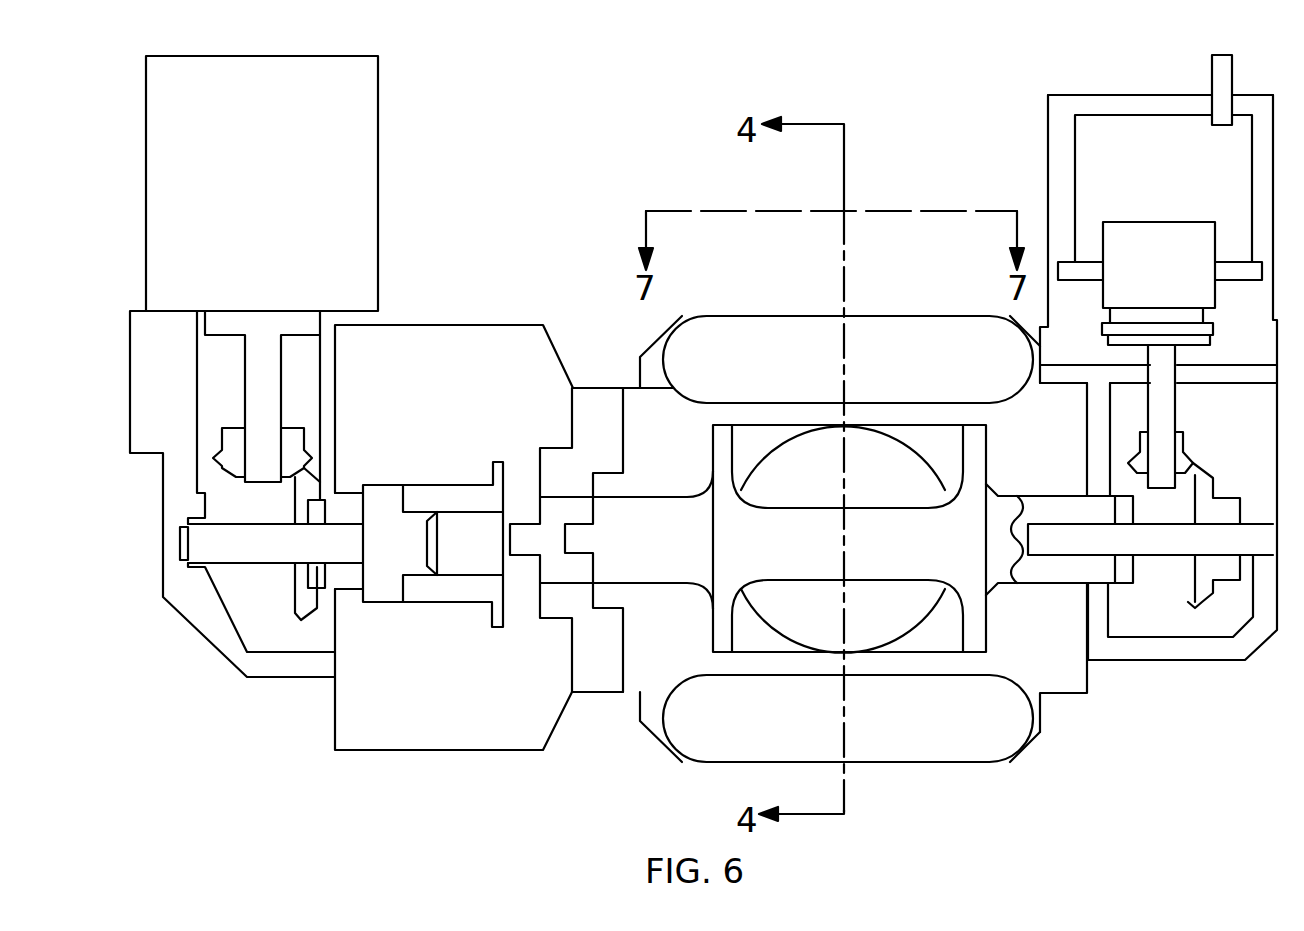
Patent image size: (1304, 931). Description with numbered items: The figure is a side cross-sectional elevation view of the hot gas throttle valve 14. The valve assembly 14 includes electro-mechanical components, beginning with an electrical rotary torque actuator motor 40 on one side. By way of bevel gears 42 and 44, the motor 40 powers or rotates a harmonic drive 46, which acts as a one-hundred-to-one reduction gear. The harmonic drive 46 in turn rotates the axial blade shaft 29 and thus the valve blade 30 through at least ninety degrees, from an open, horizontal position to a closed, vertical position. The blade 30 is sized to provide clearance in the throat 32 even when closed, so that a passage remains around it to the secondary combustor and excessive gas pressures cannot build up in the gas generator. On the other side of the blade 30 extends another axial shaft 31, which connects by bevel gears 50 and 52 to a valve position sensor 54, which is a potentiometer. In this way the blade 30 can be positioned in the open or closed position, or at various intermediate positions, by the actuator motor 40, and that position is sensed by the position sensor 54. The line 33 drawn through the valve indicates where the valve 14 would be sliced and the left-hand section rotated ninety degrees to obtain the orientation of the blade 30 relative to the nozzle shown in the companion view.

The hot gas throttle valve 14 is at (1230, 739).
The axial blade shaft 29 is at (647, 550).
The valve blade 30 is at (925, 545).
The axial shaft 31 is at (1106, 583).
The throat 32 is at (819, 495).
The line 33 is at (844, 196).
The electrical rotary torque actuator motor 40 is at (220, 218).
The bevel gear 42 is at (230, 460).
The bevel gear 44 is at (302, 606).
The harmonic drive 46 is at (484, 550).
The bevel gear 50 is at (1198, 606).
The bevel gear 52 is at (1193, 462).
The valve position sensor 54 is at (1177, 277).